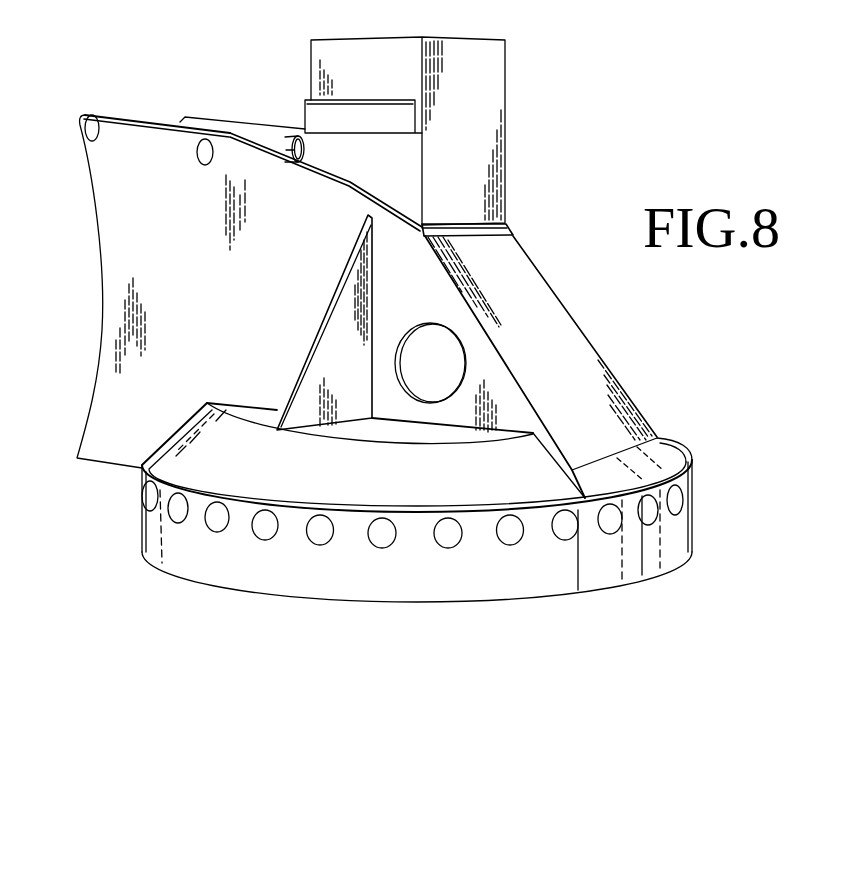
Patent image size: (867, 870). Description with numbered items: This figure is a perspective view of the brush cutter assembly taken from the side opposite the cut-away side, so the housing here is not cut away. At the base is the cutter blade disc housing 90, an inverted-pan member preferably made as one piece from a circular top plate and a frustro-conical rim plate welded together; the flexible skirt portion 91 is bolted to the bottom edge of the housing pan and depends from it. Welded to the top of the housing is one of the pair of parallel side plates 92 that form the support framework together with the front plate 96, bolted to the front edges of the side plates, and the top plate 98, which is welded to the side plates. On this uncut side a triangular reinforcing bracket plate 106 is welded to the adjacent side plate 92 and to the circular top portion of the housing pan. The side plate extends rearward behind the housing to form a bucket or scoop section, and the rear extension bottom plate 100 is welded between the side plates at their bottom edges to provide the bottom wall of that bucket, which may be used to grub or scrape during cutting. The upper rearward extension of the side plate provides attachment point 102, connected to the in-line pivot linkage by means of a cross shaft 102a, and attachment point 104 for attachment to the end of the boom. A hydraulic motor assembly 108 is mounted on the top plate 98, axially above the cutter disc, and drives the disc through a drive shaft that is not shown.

The cutter blade disc housing 90 is at (413, 492).
The flexible skirt portion 91 is at (400, 607).
The side plate 92 is at (270, 319).
The front plate 96 is at (563, 327).
The top plate 98 is at (507, 226).
The rear extension bottom plate 100 is at (118, 468).
The attachment point 102 is at (200, 163).
The cross shaft 102a is at (307, 151).
The attachment point 104 is at (98, 113).
The triangular reinforcing bracket plate 106 is at (360, 372).
The hydraulic motor assembly 108 is at (467, 45).